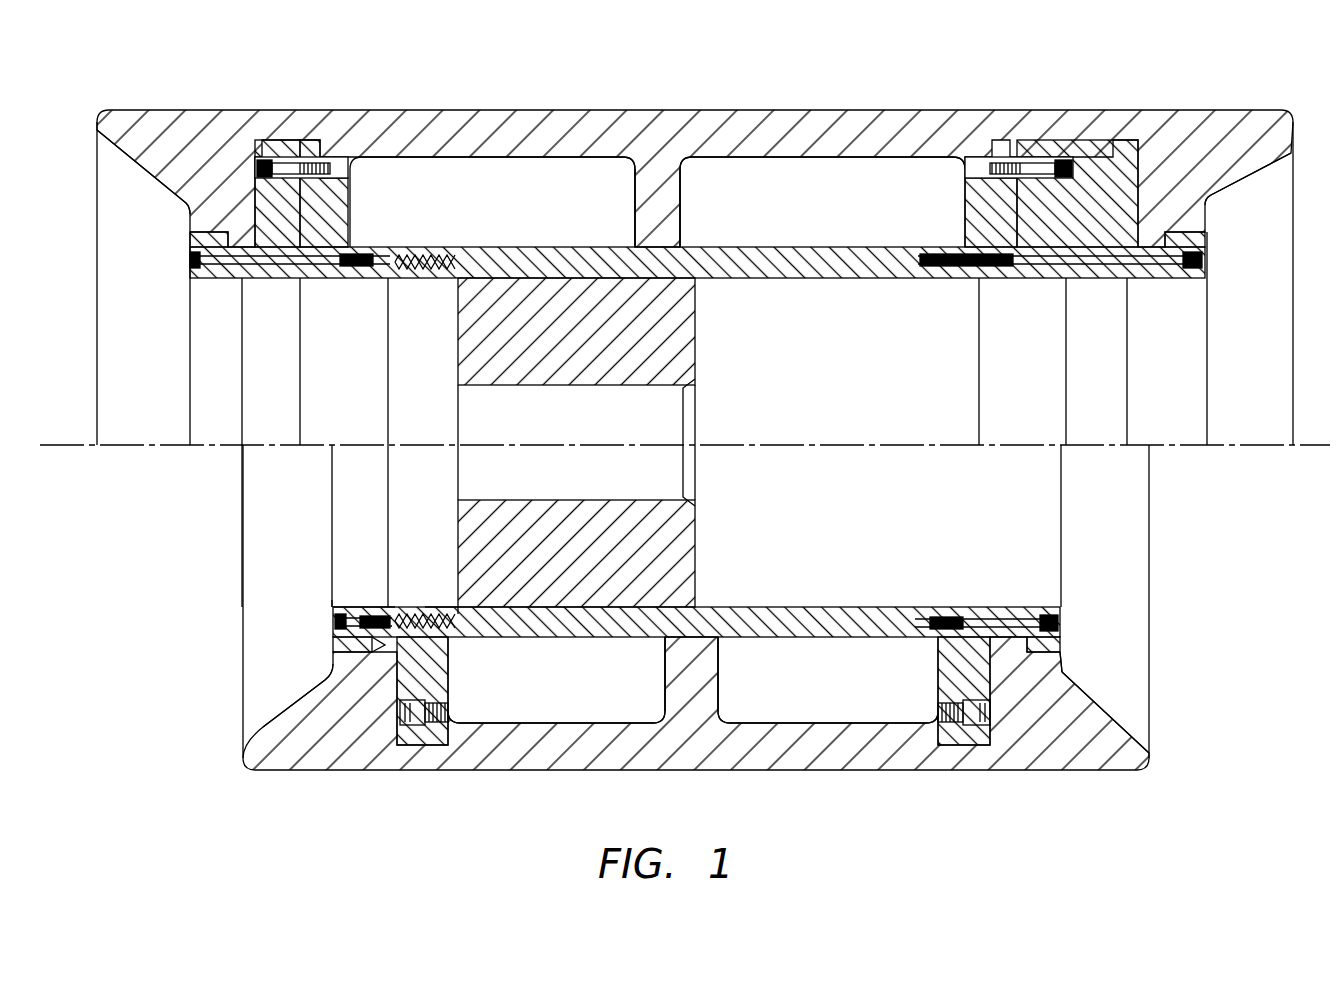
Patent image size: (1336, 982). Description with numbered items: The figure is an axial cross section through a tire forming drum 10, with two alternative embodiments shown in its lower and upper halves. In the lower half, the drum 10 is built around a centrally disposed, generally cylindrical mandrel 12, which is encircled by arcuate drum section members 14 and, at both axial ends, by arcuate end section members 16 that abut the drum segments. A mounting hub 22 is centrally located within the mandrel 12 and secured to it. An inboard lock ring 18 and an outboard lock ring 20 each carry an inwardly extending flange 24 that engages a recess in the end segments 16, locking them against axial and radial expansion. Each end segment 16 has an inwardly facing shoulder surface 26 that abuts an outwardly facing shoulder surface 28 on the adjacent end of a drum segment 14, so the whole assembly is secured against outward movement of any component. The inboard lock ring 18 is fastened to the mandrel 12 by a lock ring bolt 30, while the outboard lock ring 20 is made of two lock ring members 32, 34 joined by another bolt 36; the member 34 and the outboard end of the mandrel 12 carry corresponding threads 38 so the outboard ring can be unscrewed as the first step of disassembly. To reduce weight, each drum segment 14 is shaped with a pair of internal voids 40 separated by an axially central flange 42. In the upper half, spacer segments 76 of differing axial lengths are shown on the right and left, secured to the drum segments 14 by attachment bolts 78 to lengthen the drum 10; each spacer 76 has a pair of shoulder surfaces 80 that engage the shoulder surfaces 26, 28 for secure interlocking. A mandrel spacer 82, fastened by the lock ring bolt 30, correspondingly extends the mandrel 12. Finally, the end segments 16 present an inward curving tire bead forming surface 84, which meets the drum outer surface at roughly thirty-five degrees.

The tire forming drum 10 is at (177, 629).
The mandrel 12 is at (860, 280).
The drum section members 14 is at (680, 107).
The end section members 16 is at (103, 133).
The inboard lock ring 18 is at (1208, 238).
The outboard lock ring 20 is at (188, 236).
The mounting hub 22 is at (700, 541).
The flanges 24 is at (186, 214).
The shoulder surface 26 is at (258, 142).
The shoulder surface 28 is at (322, 136).
The lock ring bolt 30 is at (1046, 262).
The lock ring member 32 is at (352, 605).
The lock ring member 34 is at (430, 607).
The bolt 36 is at (336, 620).
The threads 38 is at (415, 615).
The internal voids 40 is at (500, 205).
The flange 42 is at (684, 185).
The spacer segments 76 is at (312, 140).
The attachment bolts 78 is at (295, 160).
The shoulder surfaces 80 is at (265, 140).
The mandrel spacer 82 is at (1096, 280).
The tire bead forming surface 84 is at (1258, 160).